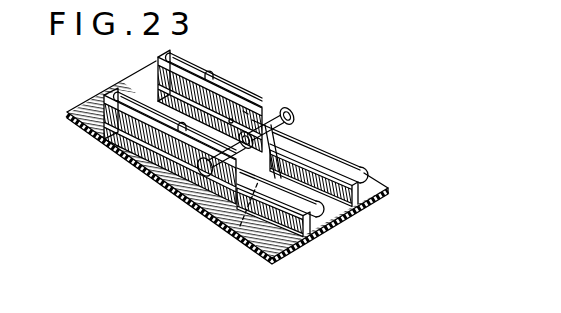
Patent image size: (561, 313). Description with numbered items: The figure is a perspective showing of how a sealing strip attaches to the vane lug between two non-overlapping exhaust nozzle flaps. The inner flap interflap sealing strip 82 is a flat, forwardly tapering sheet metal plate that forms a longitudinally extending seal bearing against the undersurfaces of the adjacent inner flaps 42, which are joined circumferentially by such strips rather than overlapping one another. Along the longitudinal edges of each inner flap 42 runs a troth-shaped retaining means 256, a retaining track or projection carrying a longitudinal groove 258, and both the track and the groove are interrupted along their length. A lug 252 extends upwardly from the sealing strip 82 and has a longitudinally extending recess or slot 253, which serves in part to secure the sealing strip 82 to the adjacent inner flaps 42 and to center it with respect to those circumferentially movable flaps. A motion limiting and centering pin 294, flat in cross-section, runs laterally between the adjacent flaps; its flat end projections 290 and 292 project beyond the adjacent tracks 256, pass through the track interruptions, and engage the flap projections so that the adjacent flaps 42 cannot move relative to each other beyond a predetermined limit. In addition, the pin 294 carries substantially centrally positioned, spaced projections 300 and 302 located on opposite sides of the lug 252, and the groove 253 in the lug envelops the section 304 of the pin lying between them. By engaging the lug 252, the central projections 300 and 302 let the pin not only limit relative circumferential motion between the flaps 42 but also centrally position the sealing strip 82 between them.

The inner flap 42 is at (387, 186).
The inner flap interflap sealing strip 82 is at (110, 92).
The troth-shaped retaining means 256 is at (157, 66).
The longitudinal groove 258 is at (192, 62).
The pin end projection 292 is at (187, 182).
The motion limiting and centering pin 294 is at (283, 130).
The pin end projection 290 is at (292, 116).
The central projection 300 is at (274, 102).
The central projection 302 is at (268, 158).
The pin section 304 is at (240, 226).
The slot 253 is at (231, 120).
The lug 252 is at (245, 113).